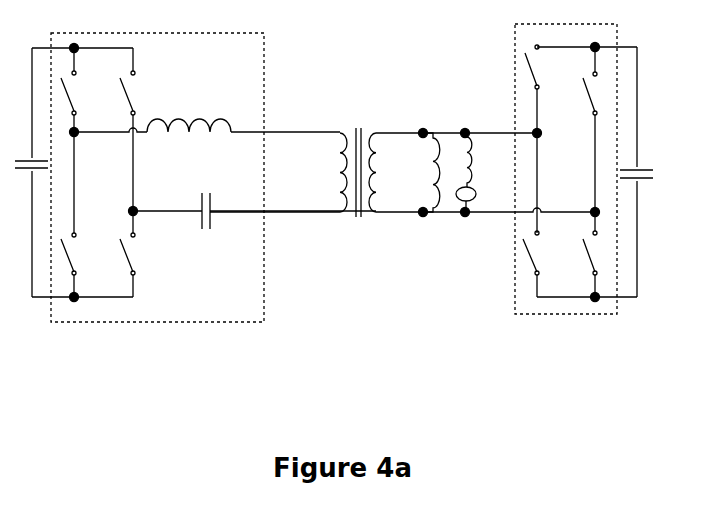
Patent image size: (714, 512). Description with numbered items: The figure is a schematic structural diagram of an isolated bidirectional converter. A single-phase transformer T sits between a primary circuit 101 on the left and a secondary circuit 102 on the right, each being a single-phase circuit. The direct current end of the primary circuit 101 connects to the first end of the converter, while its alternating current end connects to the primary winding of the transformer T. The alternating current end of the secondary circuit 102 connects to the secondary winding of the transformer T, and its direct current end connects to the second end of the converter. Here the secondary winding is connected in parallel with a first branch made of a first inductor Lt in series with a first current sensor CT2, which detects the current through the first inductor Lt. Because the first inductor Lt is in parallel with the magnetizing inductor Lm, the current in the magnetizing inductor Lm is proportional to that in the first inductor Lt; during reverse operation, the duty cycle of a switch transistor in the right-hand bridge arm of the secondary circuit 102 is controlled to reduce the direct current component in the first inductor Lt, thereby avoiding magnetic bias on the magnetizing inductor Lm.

The primary circuit 101 is at (266, 87).
The secondary circuit 102 is at (518, 50).
The single-phase transformer T is at (293, 160).
The magnetizing inductor Lm is at (418, 173).
The first inductor Lt is at (459, 173).
The first current sensor CT2 is at (484, 199).